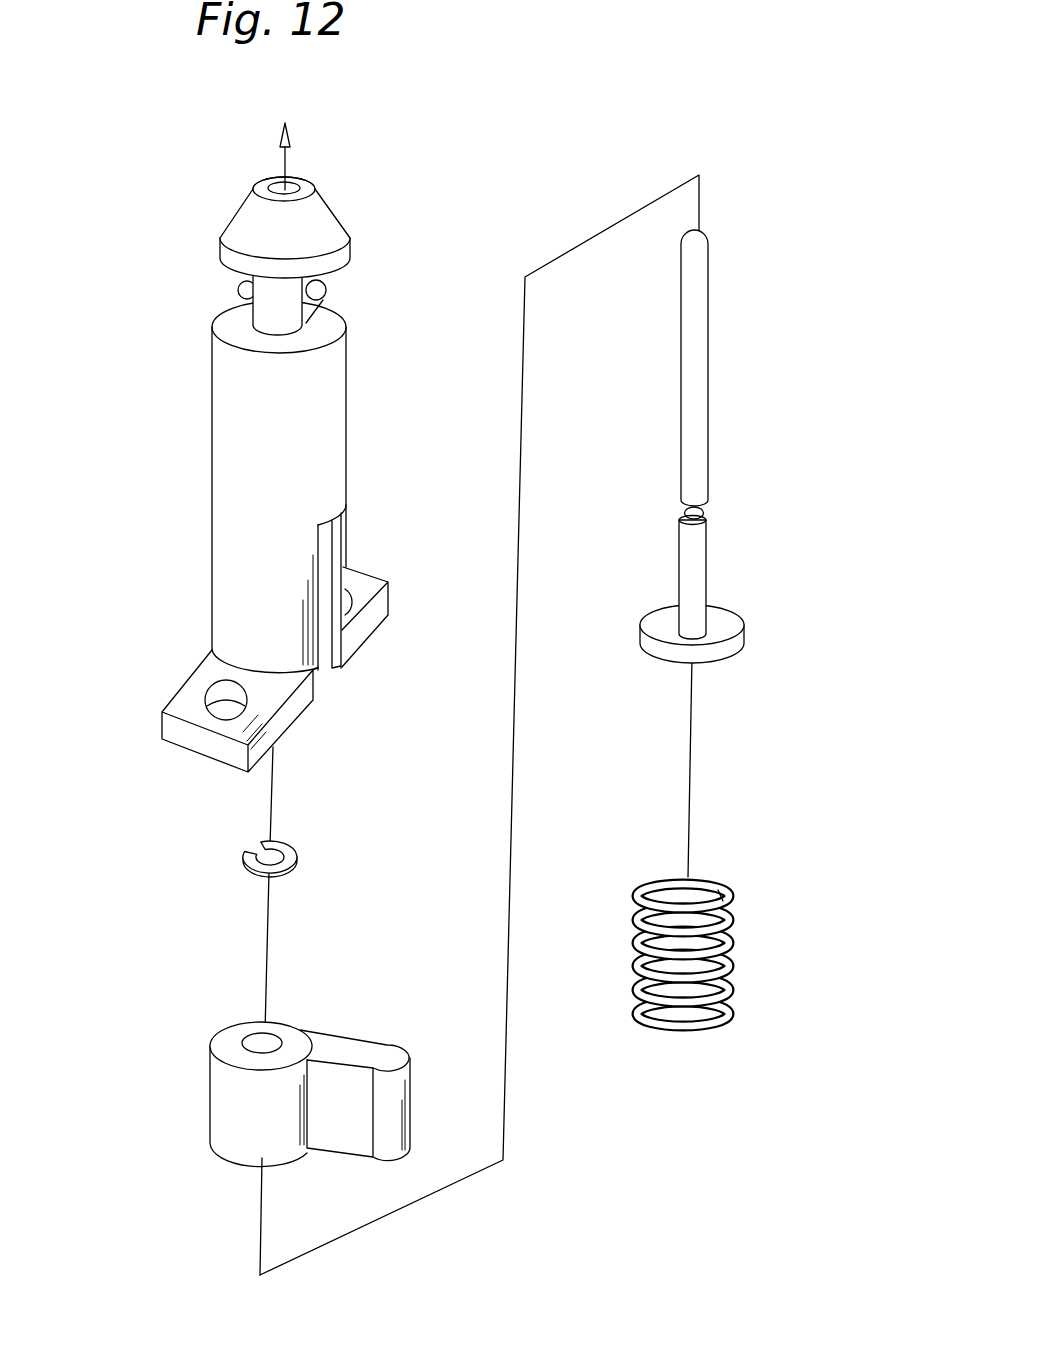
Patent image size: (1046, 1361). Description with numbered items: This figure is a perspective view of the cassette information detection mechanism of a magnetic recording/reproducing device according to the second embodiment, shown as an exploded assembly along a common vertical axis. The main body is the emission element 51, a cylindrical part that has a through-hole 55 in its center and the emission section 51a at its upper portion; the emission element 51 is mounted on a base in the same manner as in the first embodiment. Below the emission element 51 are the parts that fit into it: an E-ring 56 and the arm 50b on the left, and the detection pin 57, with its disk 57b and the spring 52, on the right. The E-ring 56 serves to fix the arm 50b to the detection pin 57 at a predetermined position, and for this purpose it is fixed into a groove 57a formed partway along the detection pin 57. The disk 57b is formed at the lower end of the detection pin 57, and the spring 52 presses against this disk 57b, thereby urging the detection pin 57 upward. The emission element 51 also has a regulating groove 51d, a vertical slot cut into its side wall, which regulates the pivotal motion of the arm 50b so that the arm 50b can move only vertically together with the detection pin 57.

The through-hole 55 is at (310, 173).
The emission section 51a is at (238, 291).
The emission element 51 is at (332, 392).
The regulating groove 51d is at (327, 538).
The E-ring 56 is at (293, 848).
The arm 50b is at (305, 1028).
The detection pin 57 is at (703, 273).
The groove 57a is at (704, 511).
The disk 57b is at (723, 625).
The spring 52 is at (715, 880).